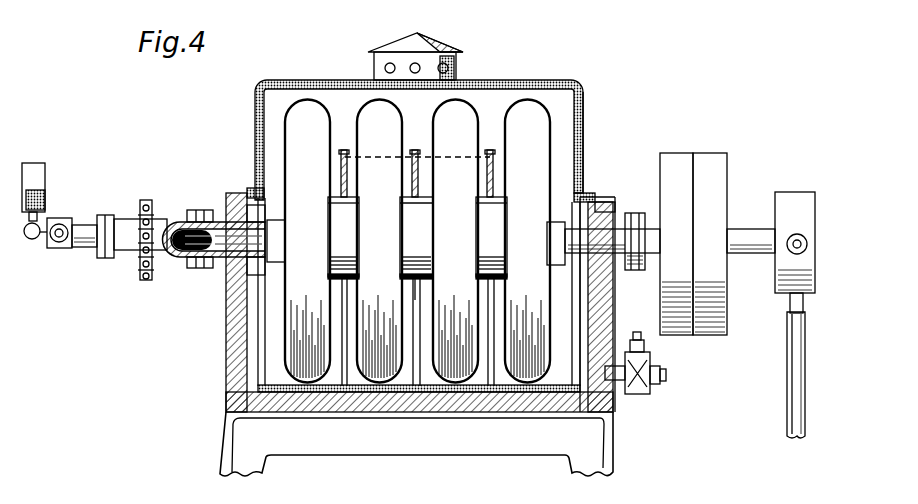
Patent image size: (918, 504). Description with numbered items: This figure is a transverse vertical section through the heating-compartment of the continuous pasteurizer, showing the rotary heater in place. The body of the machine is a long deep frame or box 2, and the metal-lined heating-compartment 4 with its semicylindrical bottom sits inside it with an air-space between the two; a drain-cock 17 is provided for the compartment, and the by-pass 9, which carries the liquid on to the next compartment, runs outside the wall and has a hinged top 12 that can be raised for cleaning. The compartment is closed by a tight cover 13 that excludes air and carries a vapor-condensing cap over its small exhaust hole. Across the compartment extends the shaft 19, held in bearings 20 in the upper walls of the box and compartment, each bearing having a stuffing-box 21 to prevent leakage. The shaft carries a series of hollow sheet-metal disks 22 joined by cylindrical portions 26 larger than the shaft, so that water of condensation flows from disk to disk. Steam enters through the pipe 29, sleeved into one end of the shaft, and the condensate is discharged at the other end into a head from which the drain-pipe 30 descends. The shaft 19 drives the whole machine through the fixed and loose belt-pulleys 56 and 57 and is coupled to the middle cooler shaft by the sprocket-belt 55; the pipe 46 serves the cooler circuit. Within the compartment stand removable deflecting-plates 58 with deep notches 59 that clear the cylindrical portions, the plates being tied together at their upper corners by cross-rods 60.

The frame or box 2 is at (228, 362).
The heating-compartment 4 is at (450, 396).
The by-pass 9 is at (184, 253).
The hinged top 12 is at (201, 210).
The cover 13 is at (525, 80).
The drain-cock 17 is at (640, 392).
The shaft 19 is at (564, 258).
The bearing 20 is at (230, 200).
The stuffing-box 21 is at (176, 222).
The hollow disk 22 is at (603, 156).
The cylindrical portion 26 is at (417, 291).
The pipe 29 is at (84, 250).
The drain-pipe 30 is at (794, 402).
The pipe 46 is at (54, 250).
The sprocket-belt 55 is at (146, 202).
The fixed belt-pulley 56 is at (675, 335).
The loose belt-pulley 57 is at (712, 335).
The deflecting-plate 58 is at (490, 152).
The notch or recess 59 is at (415, 292).
The cross-rod 60 is at (415, 155).